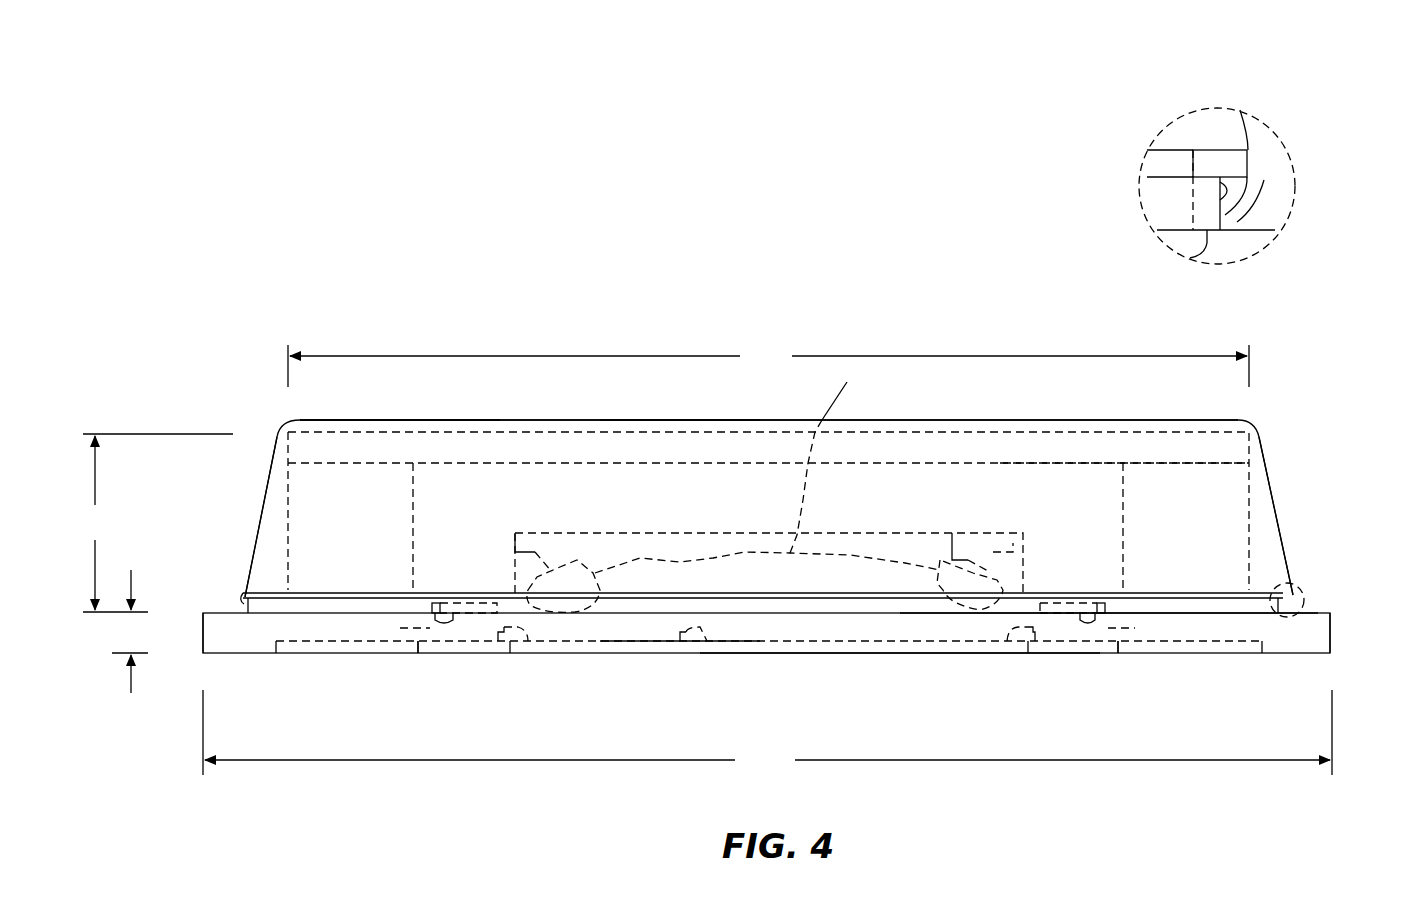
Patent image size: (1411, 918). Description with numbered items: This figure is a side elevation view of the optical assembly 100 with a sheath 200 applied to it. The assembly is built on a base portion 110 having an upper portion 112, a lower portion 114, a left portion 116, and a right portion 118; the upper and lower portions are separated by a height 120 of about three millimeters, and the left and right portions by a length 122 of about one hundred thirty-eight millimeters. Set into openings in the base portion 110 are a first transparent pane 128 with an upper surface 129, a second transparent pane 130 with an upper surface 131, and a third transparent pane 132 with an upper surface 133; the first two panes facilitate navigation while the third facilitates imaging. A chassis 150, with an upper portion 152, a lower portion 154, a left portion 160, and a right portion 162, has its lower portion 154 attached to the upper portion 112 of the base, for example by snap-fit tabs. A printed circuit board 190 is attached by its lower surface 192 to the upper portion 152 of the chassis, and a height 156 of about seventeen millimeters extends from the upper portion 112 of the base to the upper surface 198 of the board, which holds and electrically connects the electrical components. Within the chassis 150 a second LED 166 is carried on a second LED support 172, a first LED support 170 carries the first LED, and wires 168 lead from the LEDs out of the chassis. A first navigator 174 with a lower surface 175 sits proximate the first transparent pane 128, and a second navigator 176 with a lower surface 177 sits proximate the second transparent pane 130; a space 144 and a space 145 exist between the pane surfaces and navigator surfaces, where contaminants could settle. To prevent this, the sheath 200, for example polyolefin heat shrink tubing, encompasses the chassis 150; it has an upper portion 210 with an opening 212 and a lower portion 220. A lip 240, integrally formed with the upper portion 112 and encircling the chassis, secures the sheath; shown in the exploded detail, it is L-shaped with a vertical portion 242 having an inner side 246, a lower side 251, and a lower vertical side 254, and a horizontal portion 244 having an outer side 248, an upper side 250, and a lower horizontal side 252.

The optical assembly 100 is at (212, 338).
The base portion 110 is at (1327, 658).
The upper portion 112 is at (1322, 612).
The lower portion 114 is at (893, 653).
The left portion 116 is at (202, 630).
The right portion 118 is at (1331, 630).
The height 120 is at (131, 683).
The length 122 is at (767, 559).
The first transparent pane 128 is at (463, 641).
The upper surface 129 is at (528, 641).
The second transparent pane 130 is at (1070, 641).
The upper surface 131 is at (1007, 641).
The third transparent pane 132 is at (758, 641).
The upper surface 133 is at (680, 641).
The space 144 is at (400, 628).
The space 145 is at (1135, 628).
The chassis 150 is at (1254, 524).
The upper portion 152 is at (318, 465).
The lower portion 154 is at (320, 613).
The height 156 is at (154, 523).
The left portion 160 is at (288, 537).
The right portion 162 is at (1249, 487).
The second LED 166 is at (945, 570).
The wires 168 is at (745, 550).
The first LED support 170 is at (560, 568).
The second LED support 172 is at (986, 540).
The first navigator 174 is at (480, 597).
The lower surface 175 is at (443, 600).
The second navigator 176 is at (1055, 597).
The lower surface 177 is at (1095, 600).
The printed circuit board 190 is at (1070, 428).
The lower surface 192 is at (1150, 466).
The upper surface 198 is at (920, 432).
The sheath 200 is at (597, 416).
The upper portion 210 is at (405, 420).
The opening 212 is at (673, 420).
The lower portion 220 is at (242, 602).
The lip 240 is at (1300, 580).
The vertical portion 242 is at (1190, 212).
The horizontal portion 244 is at (1222, 146).
The inner side 246 is at (1190, 163).
The outer side 248 is at (1250, 163).
The upper side 250 is at (1190, 150).
The lower side 251 is at (1188, 258).
The lower horizontal side 252 is at (1256, 195).
The lower vertical side 254 is at (1218, 190).